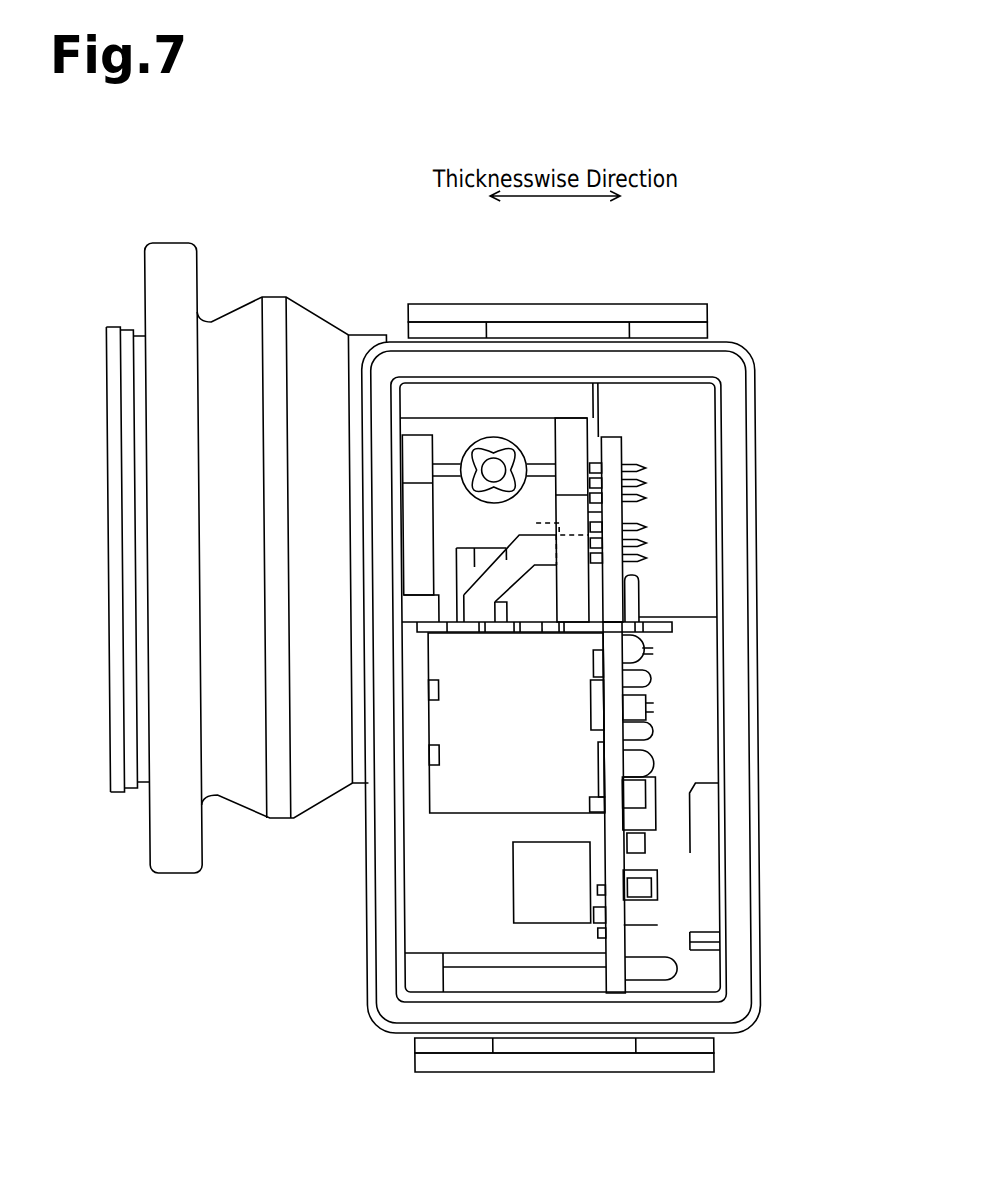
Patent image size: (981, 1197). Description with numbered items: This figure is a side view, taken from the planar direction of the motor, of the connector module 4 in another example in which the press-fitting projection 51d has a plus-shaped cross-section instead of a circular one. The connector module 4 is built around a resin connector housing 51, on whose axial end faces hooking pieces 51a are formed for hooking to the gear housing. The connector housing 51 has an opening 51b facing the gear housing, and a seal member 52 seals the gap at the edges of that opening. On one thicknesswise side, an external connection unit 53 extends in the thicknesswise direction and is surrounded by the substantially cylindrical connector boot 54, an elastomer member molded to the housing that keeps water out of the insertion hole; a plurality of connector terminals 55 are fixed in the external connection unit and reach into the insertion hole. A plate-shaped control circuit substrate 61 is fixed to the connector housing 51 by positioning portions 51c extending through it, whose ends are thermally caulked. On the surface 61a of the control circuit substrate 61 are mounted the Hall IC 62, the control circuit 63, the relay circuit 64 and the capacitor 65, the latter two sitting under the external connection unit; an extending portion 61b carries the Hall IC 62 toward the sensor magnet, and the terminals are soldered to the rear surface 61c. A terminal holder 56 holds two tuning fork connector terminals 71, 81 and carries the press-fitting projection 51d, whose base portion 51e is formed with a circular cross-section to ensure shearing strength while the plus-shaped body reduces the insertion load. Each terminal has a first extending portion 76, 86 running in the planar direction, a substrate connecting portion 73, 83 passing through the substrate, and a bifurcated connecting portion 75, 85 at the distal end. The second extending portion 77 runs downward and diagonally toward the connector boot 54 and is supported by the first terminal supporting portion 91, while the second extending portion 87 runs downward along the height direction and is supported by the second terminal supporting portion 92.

The connector module 4 is at (728, 259).
The connector housing 51 is at (757, 565).
The hooking piece 51a is at (555, 303).
The opening 51b is at (702, 458).
The positioning portion 51c is at (641, 610).
The press-fitting projection 51d is at (497, 437).
The base portion 51e is at (460, 445).
The seal member 52 is at (737, 405).
The external connection unit 53 is at (585, 430).
The connector boot 54 is at (273, 297).
The connector terminal 55 is at (632, 463).
The terminal holder 56 is at (642, 500).
The control circuit substrate 61 is at (613, 763).
The surface 61a is at (593, 772).
The extending portion 61b is at (608, 692).
The rear surface 61c is at (622, 930).
The Hall IC 62 is at (585, 703).
The control circuit 63 is at (582, 860).
The relay circuit 64 is at (446, 815).
The capacitor 65 is at (508, 897).
The connector terminal 71 is at (497, 565).
The substrate connecting portion 73 is at (641, 497).
The bifurcated connecting portion 75 is at (495, 627).
The first extending portion 76 is at (565, 495).
The second extending portion 77 is at (514, 626).
The connector terminal 81 is at (641, 558).
The substrate connecting portion 83 is at (641, 547).
The bifurcated connecting portion 85 is at (649, 633).
The first extending portion 86 is at (544, 534).
The second extending portion 87 is at (578, 624).
The first terminal supporting portion 91 is at (453, 627).
The second terminal supporting portion 92 is at (541, 627).